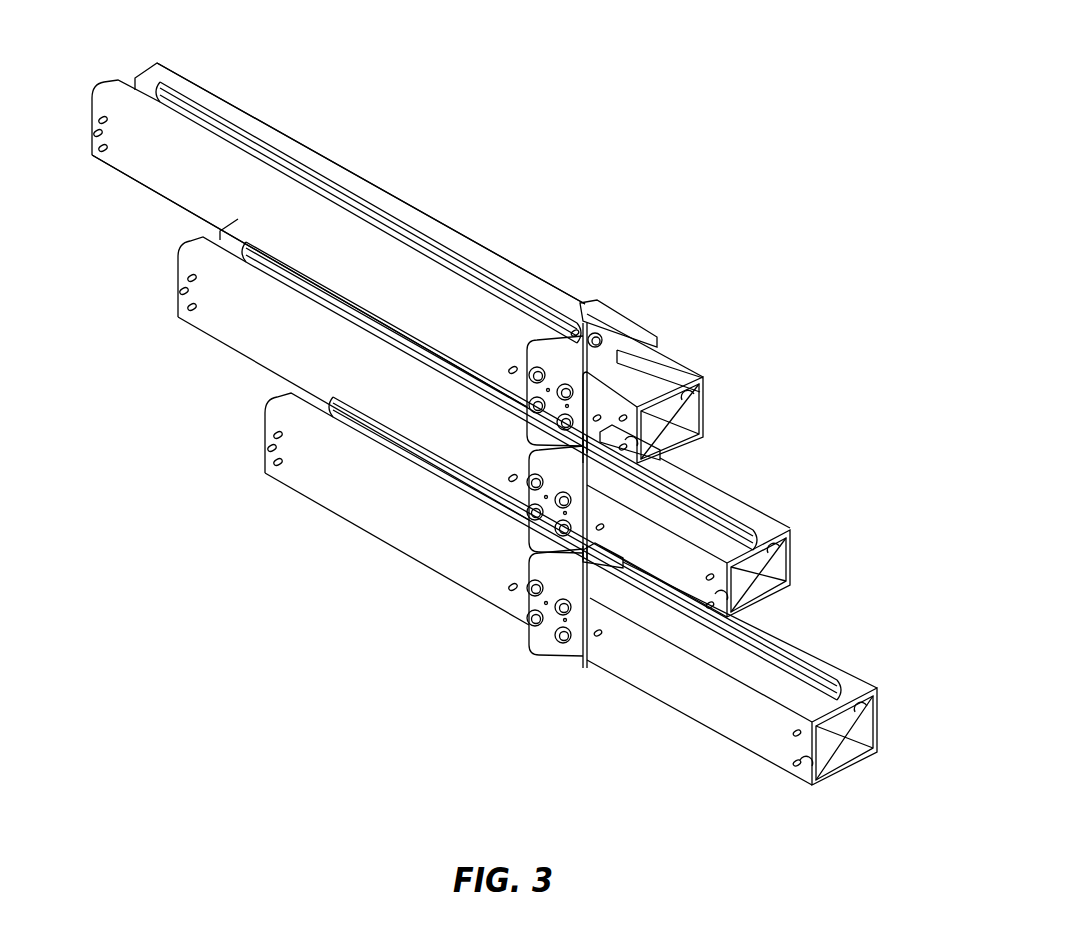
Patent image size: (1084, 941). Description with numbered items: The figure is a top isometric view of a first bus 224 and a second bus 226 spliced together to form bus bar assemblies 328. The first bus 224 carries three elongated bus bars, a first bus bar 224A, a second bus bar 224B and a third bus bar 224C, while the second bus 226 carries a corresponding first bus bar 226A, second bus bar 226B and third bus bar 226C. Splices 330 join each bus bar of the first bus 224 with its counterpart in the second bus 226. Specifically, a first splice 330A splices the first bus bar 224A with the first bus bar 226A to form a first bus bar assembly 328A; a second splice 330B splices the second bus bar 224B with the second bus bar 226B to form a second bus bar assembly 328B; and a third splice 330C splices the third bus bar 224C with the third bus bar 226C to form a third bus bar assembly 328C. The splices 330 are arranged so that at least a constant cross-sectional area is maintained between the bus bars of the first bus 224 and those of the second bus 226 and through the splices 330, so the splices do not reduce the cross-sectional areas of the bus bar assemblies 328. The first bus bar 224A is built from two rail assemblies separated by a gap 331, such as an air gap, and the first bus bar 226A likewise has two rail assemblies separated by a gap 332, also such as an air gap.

The first bus 224 is at (533, 232).
The first bus bar of the first bus 224A is at (147, 188).
The second bus bar of the first bus 224B is at (180, 294).
The third bus bar of the first bus 224C is at (267, 457).
The second bus 226 is at (843, 418).
The first bus bar of the second bus 226A is at (702, 368).
The second bus bar of the second bus 226B is at (765, 516).
The third bus bar of the second bus 226C is at (820, 655).
The bus bar assemblies 328 is at (679, 207).
The first bus bar assembly 328A is at (382, 181).
The second bus bar assembly 328B is at (255, 361).
The third bus bar assembly 328C is at (698, 724).
The splices 330 is at (660, 289).
The first splice 330A is at (640, 328).
The second splice 330B is at (527, 503).
The third splice 330C is at (553, 646).
The gap 331 is at (230, 33).
The gap 332 is at (597, 407).